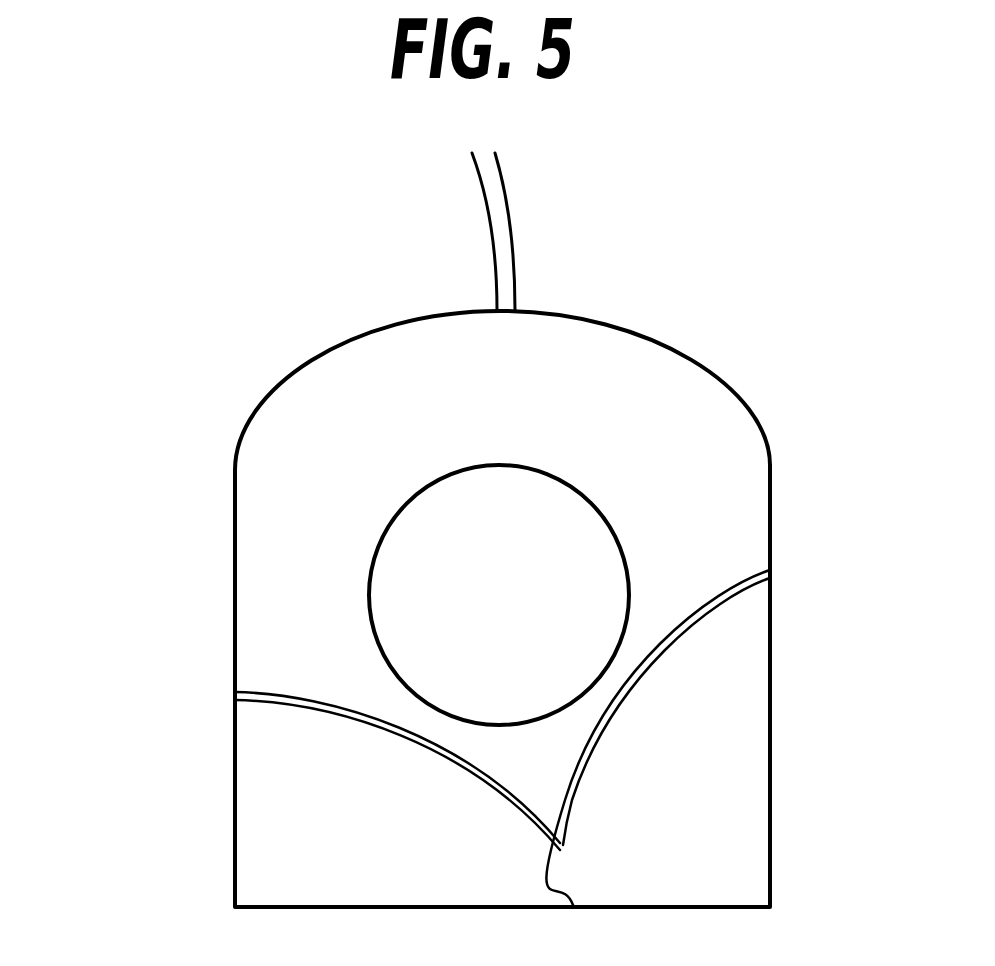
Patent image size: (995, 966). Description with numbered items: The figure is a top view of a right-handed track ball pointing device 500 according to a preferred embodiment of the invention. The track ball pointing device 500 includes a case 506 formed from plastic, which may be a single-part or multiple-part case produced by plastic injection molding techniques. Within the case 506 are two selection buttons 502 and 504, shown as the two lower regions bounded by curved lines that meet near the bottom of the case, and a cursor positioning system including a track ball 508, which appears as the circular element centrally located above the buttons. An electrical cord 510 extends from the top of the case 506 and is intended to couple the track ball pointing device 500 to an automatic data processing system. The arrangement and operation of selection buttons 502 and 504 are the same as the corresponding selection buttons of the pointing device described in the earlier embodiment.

The track ball pointing device 500 is at (475, 507).
The selection button 502 is at (723, 750).
The selection button 504 is at (318, 798).
The case 506 is at (730, 390).
The track ball 508 is at (618, 545).
The electrical cord 510 is at (517, 189).